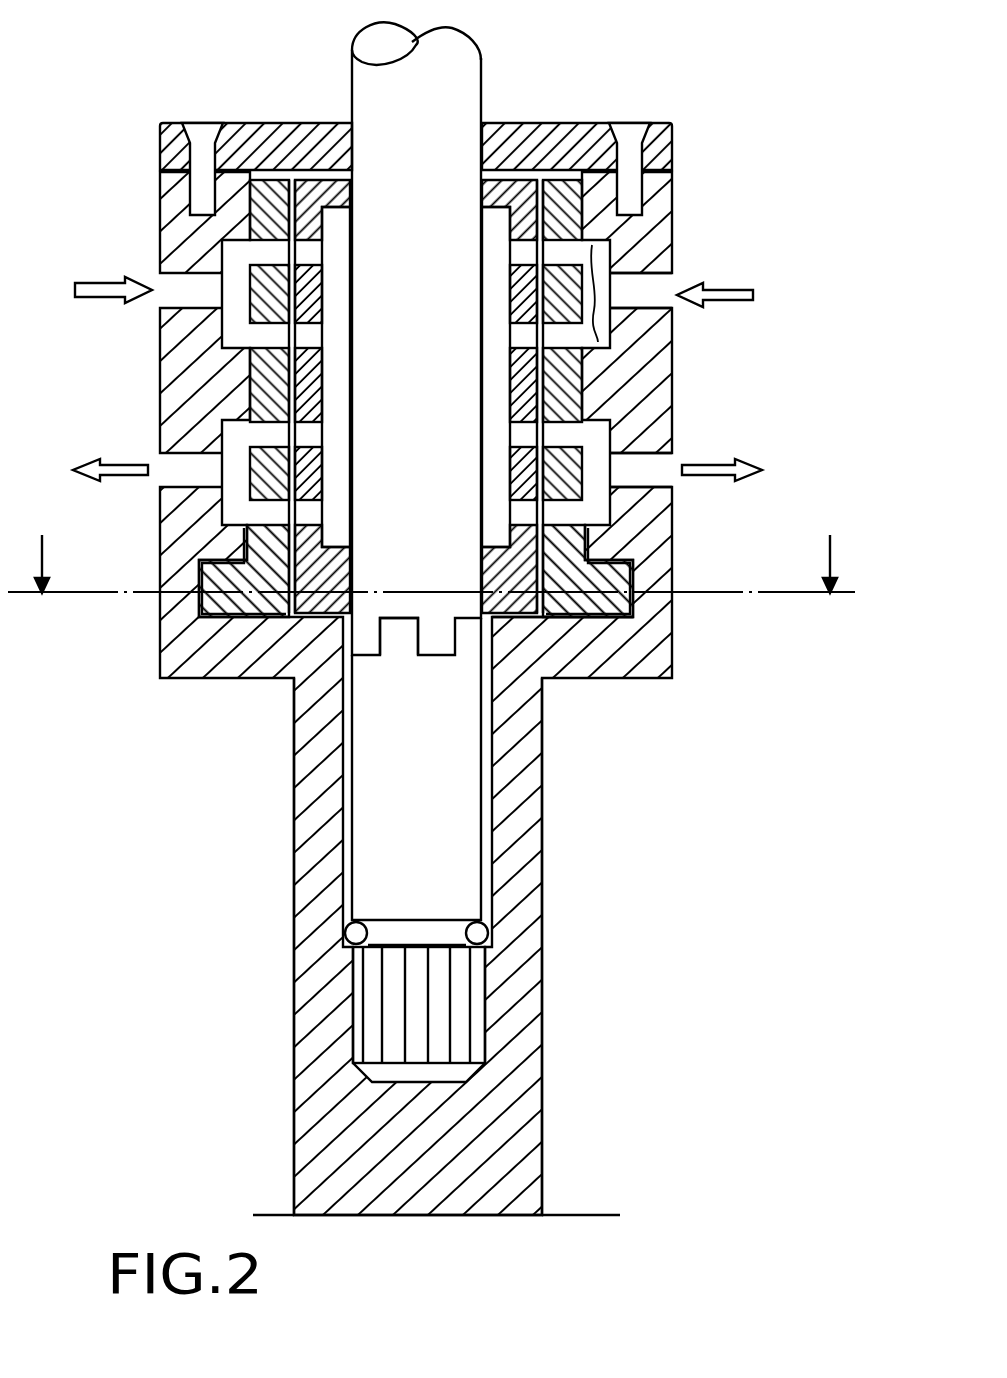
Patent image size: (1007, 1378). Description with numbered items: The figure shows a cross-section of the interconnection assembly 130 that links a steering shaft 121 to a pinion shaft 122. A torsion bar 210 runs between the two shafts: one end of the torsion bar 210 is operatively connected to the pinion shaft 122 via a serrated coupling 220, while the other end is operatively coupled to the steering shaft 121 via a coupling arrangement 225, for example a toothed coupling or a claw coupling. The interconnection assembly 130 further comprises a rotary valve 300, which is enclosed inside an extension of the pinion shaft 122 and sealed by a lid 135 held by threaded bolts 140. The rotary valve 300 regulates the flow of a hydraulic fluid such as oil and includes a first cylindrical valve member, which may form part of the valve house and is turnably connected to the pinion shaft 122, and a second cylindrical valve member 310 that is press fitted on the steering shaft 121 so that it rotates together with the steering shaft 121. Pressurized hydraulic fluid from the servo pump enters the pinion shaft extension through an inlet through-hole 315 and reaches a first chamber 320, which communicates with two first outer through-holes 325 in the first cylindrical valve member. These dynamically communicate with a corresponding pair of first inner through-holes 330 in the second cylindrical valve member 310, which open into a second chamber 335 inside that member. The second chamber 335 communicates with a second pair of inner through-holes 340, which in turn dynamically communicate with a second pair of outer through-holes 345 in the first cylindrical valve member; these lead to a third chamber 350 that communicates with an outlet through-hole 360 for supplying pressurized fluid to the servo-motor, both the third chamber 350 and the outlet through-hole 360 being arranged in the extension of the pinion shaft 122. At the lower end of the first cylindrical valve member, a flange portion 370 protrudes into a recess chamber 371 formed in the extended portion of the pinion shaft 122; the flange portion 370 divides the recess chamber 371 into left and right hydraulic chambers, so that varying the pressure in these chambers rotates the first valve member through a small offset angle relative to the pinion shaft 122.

The interconnection assembly 130 is at (766, 112).
The steering shaft 121 is at (445, 87).
The pinion shaft 122 is at (487, 1167).
The lid 135 is at (283, 138).
The threaded bolts 140 is at (204, 124).
The torsion bar 210 is at (400, 806).
The serrated coupling 220 is at (440, 1008).
The coupling arrangement 225 is at (418, 642).
The rotary valve 300 is at (500, 388).
The second cylindrical valve member 310 is at (497, 184).
The inlet through-hole 315 is at (650, 303).
The first chamber 320 is at (562, 335).
The first outer through-holes 325 is at (570, 252).
The first inner through-holes 330 is at (568, 254).
The second chamber 335 is at (522, 253).
The second pair of inner through-holes 340 is at (515, 436).
The second pair of outer through-holes 345 is at (568, 434).
The third chamber 350 is at (565, 513).
The outlet through-hole 360 is at (655, 481).
The flange portion 370 is at (613, 602).
The recess chamber 371 is at (562, 622).